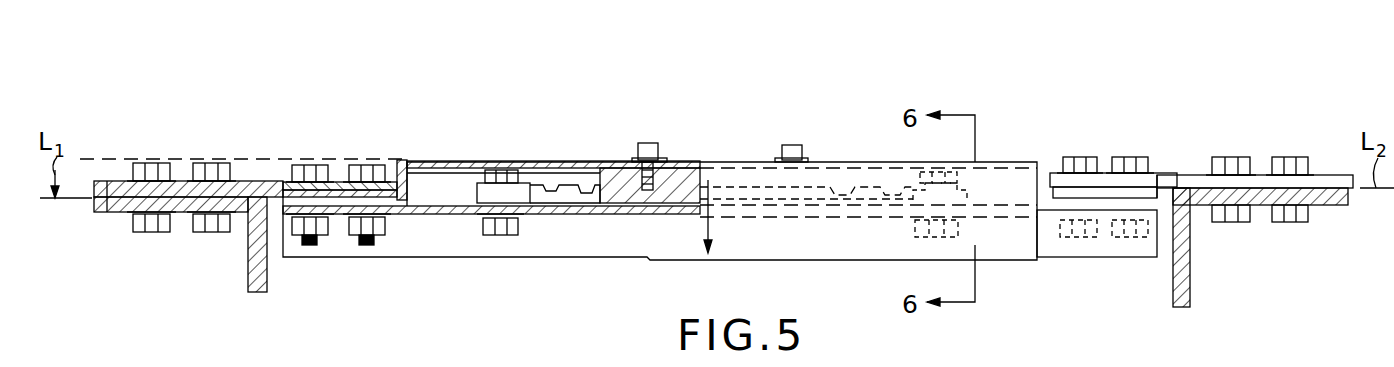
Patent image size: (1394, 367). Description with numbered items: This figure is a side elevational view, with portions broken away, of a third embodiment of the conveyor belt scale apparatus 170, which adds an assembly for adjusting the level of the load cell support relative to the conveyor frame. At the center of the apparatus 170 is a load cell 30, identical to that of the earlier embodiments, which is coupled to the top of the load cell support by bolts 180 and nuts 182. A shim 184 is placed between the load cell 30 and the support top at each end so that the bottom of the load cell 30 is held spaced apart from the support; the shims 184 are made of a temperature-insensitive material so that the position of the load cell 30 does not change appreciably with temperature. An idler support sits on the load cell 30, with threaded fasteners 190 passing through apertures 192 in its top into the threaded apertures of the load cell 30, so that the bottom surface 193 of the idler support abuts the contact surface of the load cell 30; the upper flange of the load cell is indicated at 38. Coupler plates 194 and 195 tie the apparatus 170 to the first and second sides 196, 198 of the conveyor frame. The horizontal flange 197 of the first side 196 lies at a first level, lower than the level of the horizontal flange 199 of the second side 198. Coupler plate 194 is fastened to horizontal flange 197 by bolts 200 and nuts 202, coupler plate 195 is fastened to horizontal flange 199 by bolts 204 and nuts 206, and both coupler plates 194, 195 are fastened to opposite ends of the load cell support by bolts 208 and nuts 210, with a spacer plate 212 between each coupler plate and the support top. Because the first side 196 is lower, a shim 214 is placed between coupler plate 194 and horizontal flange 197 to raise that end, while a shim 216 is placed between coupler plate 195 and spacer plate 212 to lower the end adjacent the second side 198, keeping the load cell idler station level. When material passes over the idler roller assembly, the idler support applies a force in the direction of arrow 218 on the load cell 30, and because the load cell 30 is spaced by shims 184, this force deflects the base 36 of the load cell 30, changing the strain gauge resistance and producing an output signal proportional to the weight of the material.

The belt scale apparatus 170 is at (560, 105).
The load cell 30 is at (620, 185).
The base 36 is at (575, 210).
The top flange 38 is at (607, 162).
The bolts 180 is at (500, 170).
The nuts 182 is at (500, 237).
The shim 184 is at (470, 197).
The threaded fasteners 190 is at (649, 143).
The apertures 192 is at (650, 165).
The bottom surface 193 is at (572, 185).
The coupler plate 194 is at (248, 181).
The coupler plate 195 is at (1185, 178).
The first side 196 is at (244, 268).
The horizontal flange 197 is at (110, 212).
The second side 198 is at (1200, 291).
The horizontal flange 199 is at (1343, 205).
The bolts 200 is at (208, 163).
The nuts 202 is at (216, 232).
The bolts 204 is at (1290, 157).
The nuts 206 is at (1293, 222).
The bolts 208 is at (365, 165).
The nuts 210 is at (360, 245).
The spacer plate 212 is at (415, 197).
The shim 214 is at (107, 197).
The shim 216 is at (1160, 177).
The arrow 218 is at (712, 222).